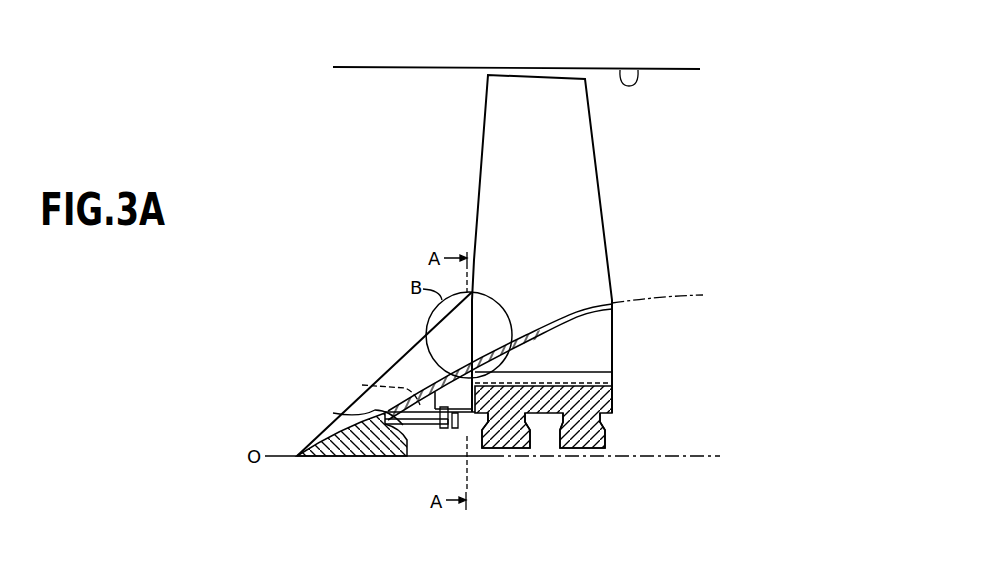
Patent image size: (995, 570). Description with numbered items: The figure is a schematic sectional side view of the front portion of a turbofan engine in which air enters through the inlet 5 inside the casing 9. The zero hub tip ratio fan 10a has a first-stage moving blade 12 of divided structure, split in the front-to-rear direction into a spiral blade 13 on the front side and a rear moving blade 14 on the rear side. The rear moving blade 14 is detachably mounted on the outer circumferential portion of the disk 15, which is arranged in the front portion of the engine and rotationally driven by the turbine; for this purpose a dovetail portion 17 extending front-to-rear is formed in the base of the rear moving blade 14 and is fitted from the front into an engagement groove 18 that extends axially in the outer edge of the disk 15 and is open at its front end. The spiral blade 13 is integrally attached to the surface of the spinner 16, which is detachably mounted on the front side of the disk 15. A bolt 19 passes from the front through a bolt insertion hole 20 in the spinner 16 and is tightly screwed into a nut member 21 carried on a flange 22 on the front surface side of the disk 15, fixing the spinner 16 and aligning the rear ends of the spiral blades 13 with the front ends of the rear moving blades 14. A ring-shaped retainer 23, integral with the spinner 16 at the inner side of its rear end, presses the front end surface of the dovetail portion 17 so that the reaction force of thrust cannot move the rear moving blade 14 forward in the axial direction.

The inlet 5 is at (346, 158).
The casing 9 is at (631, 69).
The zero hub tip ratio fan 10a is at (436, 84).
The first-stage moving blade 12 is at (333, 210).
The spiral blade 13 is at (398, 372).
The rear moving blade 14 is at (490, 218).
The disk 15 is at (613, 402).
The spinner 16 is at (367, 457).
The dovetail portion 17 is at (613, 379).
The engagement groove 18 is at (555, 392).
The bolt 19 is at (362, 385).
The bolt insertion hole 20 is at (333, 413).
The nut member 21 is at (456, 431).
The flange 22 is at (442, 431).
The ring-shaped retainer 23 is at (397, 367).